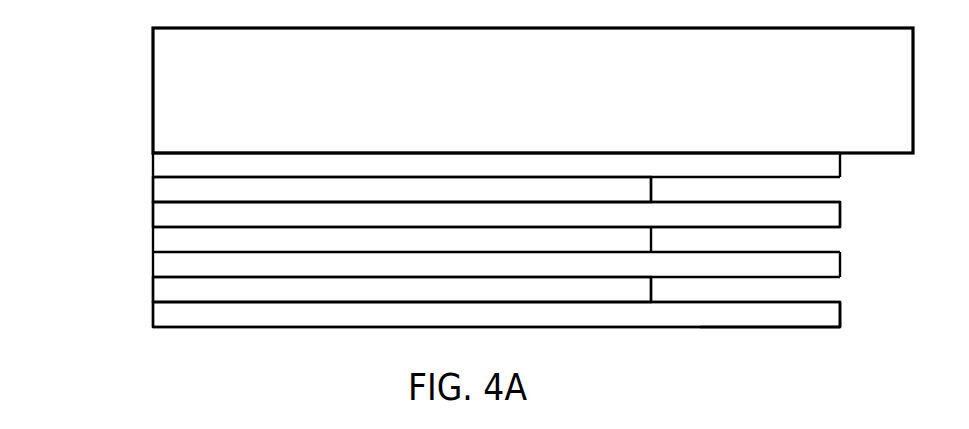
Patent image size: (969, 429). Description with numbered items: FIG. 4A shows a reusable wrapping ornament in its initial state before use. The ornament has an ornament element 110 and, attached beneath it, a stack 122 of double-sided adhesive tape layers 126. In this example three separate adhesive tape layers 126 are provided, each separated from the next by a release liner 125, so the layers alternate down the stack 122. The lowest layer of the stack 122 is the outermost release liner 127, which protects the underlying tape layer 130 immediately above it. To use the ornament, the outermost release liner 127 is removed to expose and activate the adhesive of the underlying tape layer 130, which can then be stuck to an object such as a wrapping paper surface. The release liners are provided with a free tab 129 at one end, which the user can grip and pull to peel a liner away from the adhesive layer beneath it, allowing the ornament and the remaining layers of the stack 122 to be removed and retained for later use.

The ornament element 110 is at (172, 99).
The stack 122 is at (85, 153).
The double-sided adhesive tape layers 126 is at (175, 187).
The release liner 125 is at (175, 216).
The underlying tape layer 130 is at (183, 287).
The outermost release liner 127 is at (183, 317).
The free tab 129 is at (817, 318).